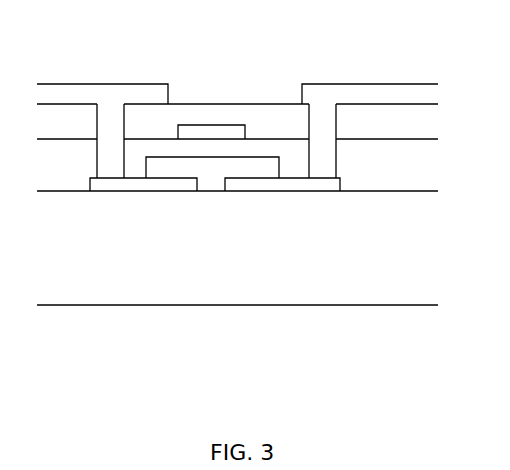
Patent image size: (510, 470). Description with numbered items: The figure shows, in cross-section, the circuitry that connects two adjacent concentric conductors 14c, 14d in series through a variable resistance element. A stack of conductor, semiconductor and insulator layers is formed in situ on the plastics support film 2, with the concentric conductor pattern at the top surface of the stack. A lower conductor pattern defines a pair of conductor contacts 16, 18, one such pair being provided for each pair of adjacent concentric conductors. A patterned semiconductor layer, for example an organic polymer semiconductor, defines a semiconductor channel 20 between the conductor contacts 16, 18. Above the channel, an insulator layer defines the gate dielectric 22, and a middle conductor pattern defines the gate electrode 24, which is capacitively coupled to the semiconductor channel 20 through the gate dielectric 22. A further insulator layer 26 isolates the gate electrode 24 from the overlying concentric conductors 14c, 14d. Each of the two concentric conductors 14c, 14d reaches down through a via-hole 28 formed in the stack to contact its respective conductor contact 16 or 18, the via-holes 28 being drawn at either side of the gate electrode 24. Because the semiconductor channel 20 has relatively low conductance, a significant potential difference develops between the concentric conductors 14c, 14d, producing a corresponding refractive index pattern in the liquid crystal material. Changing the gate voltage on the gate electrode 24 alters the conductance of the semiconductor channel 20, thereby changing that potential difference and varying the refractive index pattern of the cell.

The plastics support film 2 is at (307, 277).
The concentric conductor 14c is at (108, 93).
The concentric conductor 14d is at (380, 92).
The conductor contact 16 is at (137, 185).
The conductor contact 18 is at (292, 183).
The semiconductor channel 20 is at (207, 173).
The gate dielectric 22 is at (65, 183).
The gate electrode 24 is at (223, 131).
The insulator layer 26 is at (255, 113).
The via (contact plug) 28 is at (97, 153).